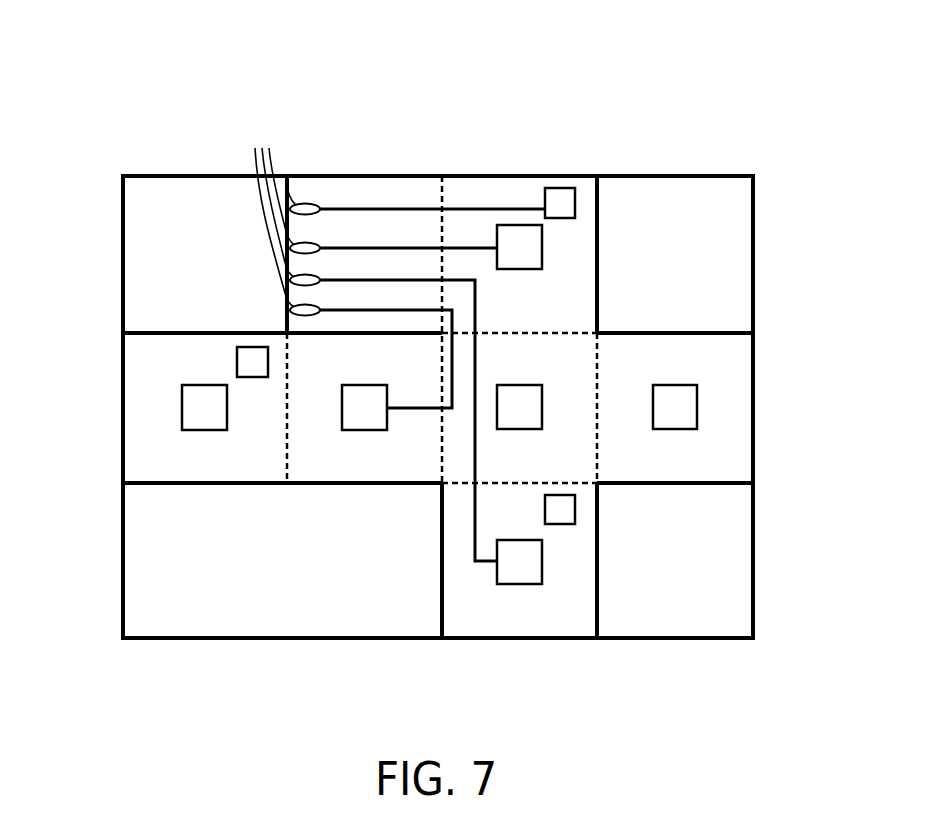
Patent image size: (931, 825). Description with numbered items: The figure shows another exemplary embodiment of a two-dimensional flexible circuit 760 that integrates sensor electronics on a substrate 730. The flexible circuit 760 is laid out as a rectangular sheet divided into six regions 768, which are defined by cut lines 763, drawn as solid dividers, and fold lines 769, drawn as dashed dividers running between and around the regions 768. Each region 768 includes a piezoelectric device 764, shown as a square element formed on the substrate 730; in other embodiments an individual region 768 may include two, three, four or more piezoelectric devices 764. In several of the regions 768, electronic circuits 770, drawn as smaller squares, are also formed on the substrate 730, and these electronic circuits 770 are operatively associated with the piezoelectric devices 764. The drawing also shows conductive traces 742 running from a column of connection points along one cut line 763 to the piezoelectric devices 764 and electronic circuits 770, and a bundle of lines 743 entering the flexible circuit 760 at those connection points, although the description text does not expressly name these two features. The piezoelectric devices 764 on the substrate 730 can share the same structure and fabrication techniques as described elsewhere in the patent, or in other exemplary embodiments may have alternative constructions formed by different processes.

The flexible circuit 760 is at (730, 103).
The substrate 730 is at (738, 228).
The conductive traces 742 is at (355, 208).
The optical fibers 743 is at (303, 307).
The cut lines 763 is at (287, 268).
The piezoelectric device 764 is at (542, 262).
The regions 768 is at (487, 316).
The fold lines 769 is at (442, 197).
The electronic circuits 770 is at (577, 203).